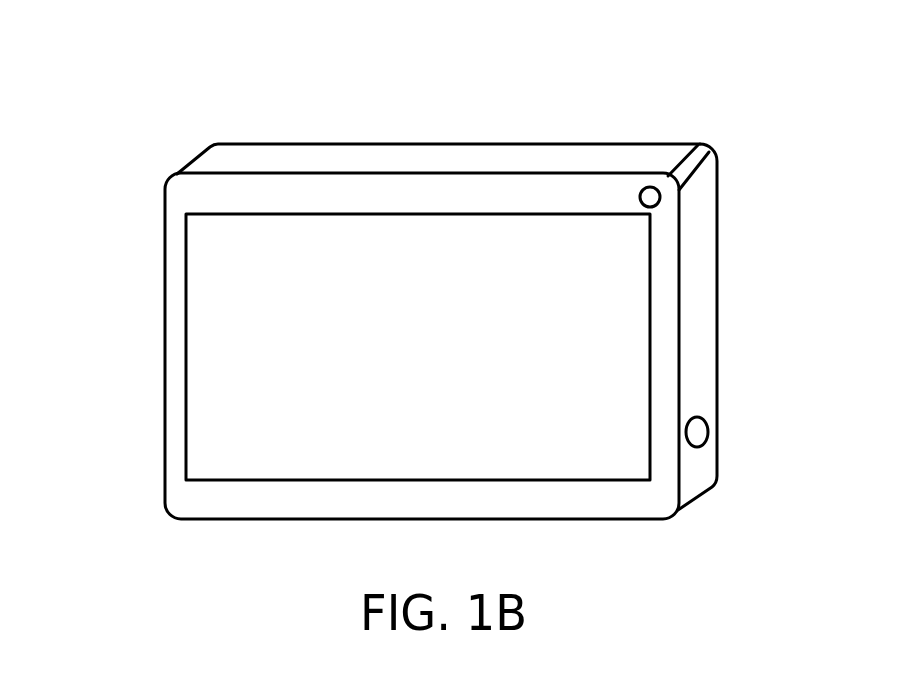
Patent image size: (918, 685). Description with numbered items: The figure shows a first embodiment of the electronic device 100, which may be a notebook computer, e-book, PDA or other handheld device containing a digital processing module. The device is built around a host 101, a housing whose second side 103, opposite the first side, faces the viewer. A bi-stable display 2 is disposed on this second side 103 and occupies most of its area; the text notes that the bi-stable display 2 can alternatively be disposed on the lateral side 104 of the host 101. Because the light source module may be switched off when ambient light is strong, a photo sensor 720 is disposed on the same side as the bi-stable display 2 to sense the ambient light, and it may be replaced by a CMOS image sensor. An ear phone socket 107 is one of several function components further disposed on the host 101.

The electronic device 100 is at (125, 459).
The host 101 is at (698, 312).
The second side 103 is at (618, 195).
The lateral side 104 is at (508, 157).
The ear phone socket 107 is at (697, 432).
The photo sensor 720 is at (660, 190).
The bi-stable display 2 is at (197, 333).